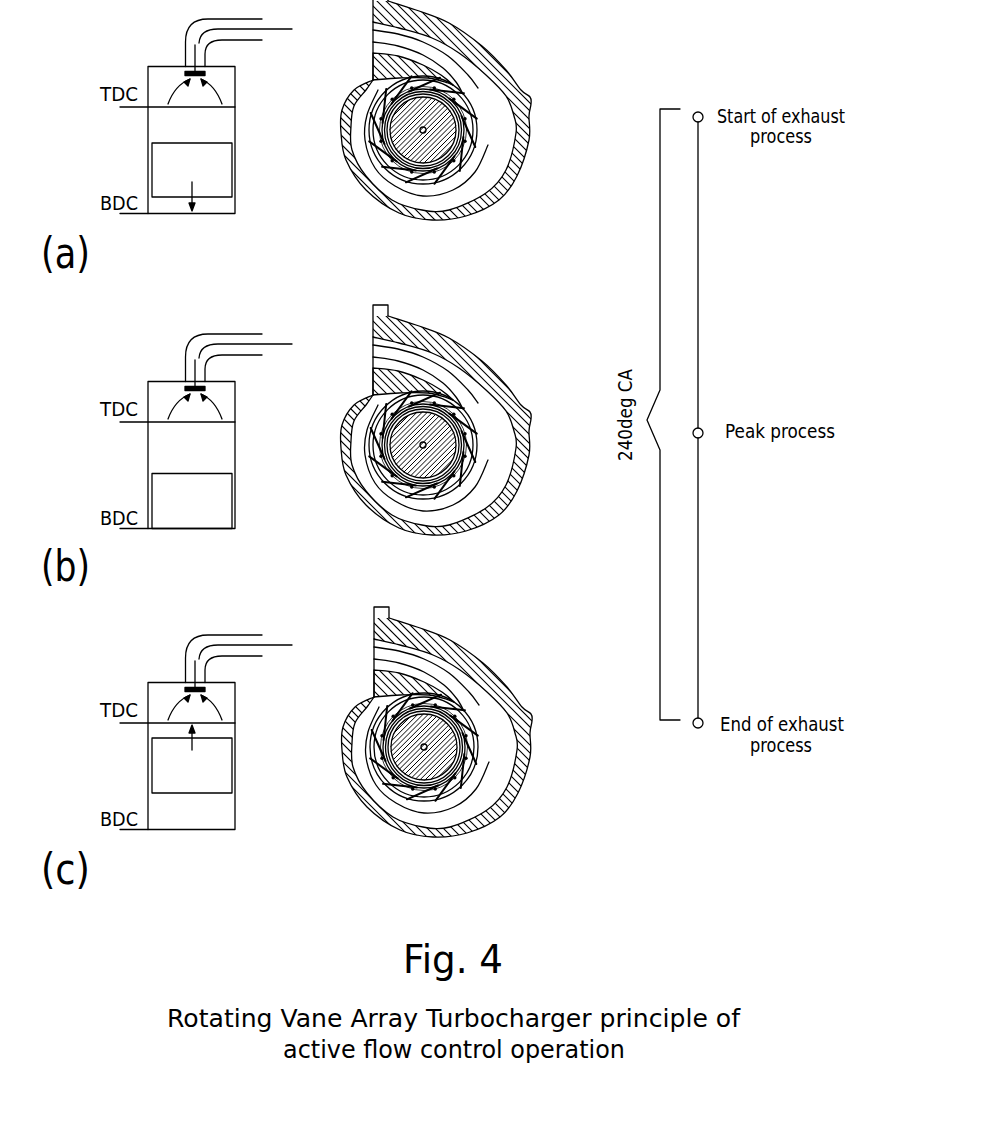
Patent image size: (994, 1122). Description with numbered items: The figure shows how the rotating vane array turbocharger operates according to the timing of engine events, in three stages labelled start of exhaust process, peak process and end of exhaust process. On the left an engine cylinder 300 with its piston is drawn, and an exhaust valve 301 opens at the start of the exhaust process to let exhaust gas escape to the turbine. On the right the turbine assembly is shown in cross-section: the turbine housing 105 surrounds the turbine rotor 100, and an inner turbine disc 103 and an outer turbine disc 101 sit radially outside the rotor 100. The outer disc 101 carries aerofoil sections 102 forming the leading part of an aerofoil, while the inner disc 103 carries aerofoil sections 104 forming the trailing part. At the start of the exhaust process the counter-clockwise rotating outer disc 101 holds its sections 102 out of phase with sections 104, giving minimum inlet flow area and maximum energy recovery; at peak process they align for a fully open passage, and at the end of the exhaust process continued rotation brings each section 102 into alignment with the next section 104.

The turbine rotor 100 is at (387, 416).
The outer turbine disc 101 is at (441, 468).
The aerofoil sections on the outer disc 102 is at (475, 448).
The inner turbine disc 103 is at (423, 480).
The aerofoil sections on the inner disc 104 is at (471, 434).
The turbine housing 105 is at (440, 558).
The engine cylinder 300 is at (130, 143).
The exhaust valve 301 is at (191, 65).